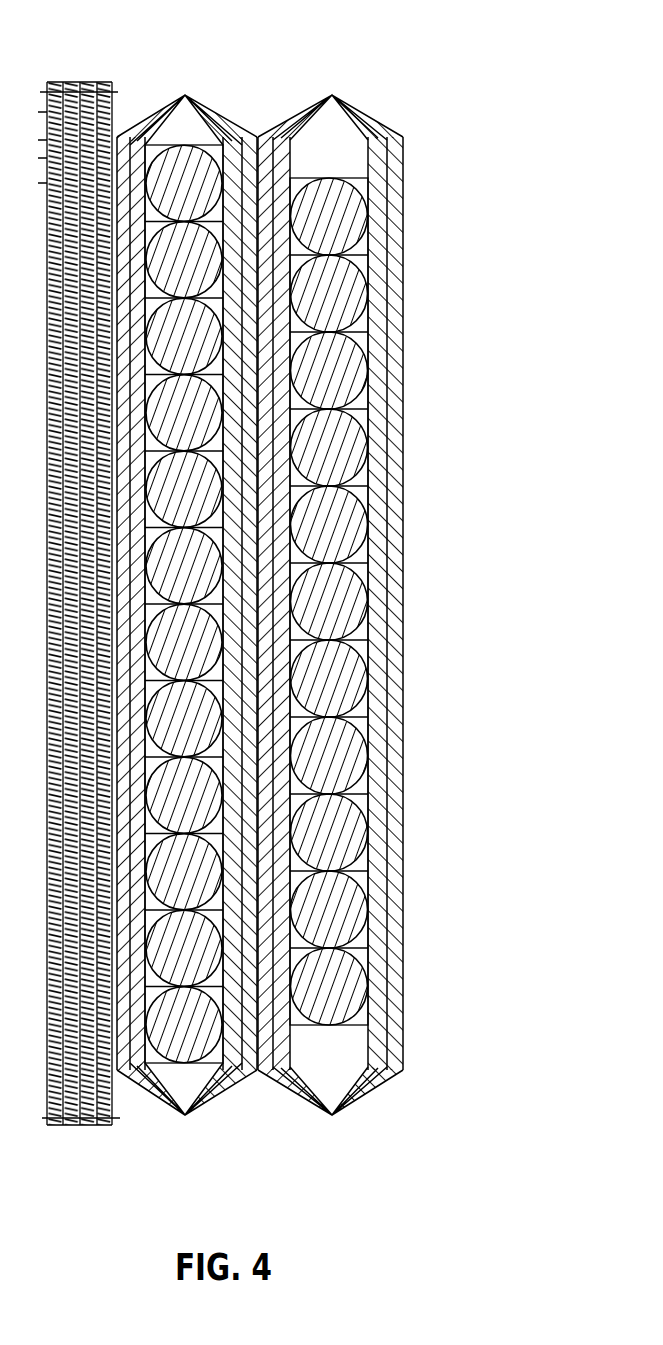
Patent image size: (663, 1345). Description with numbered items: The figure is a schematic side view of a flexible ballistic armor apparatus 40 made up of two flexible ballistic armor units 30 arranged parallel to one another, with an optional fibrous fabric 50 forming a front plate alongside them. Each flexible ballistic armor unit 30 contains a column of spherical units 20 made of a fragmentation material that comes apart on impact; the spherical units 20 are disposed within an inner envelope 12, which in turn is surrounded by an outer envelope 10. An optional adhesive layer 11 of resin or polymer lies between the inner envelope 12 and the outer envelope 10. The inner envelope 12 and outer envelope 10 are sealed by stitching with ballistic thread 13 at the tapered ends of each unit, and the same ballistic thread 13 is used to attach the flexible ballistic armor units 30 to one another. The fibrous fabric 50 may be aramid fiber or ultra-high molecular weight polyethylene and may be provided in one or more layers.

The outer envelope 10 is at (405, 626).
The adhesive layer 11 is at (393, 917).
The inner envelope 12 is at (379, 853).
The ballistic thread 13 is at (192, 83).
The spherical unit 20 is at (353, 745).
The flexible ballistic armor unit 30 is at (334, 595).
The flexible ballistic armor apparatus 40 is at (304, 616).
The fibrous fabric 50 is at (49, 78).